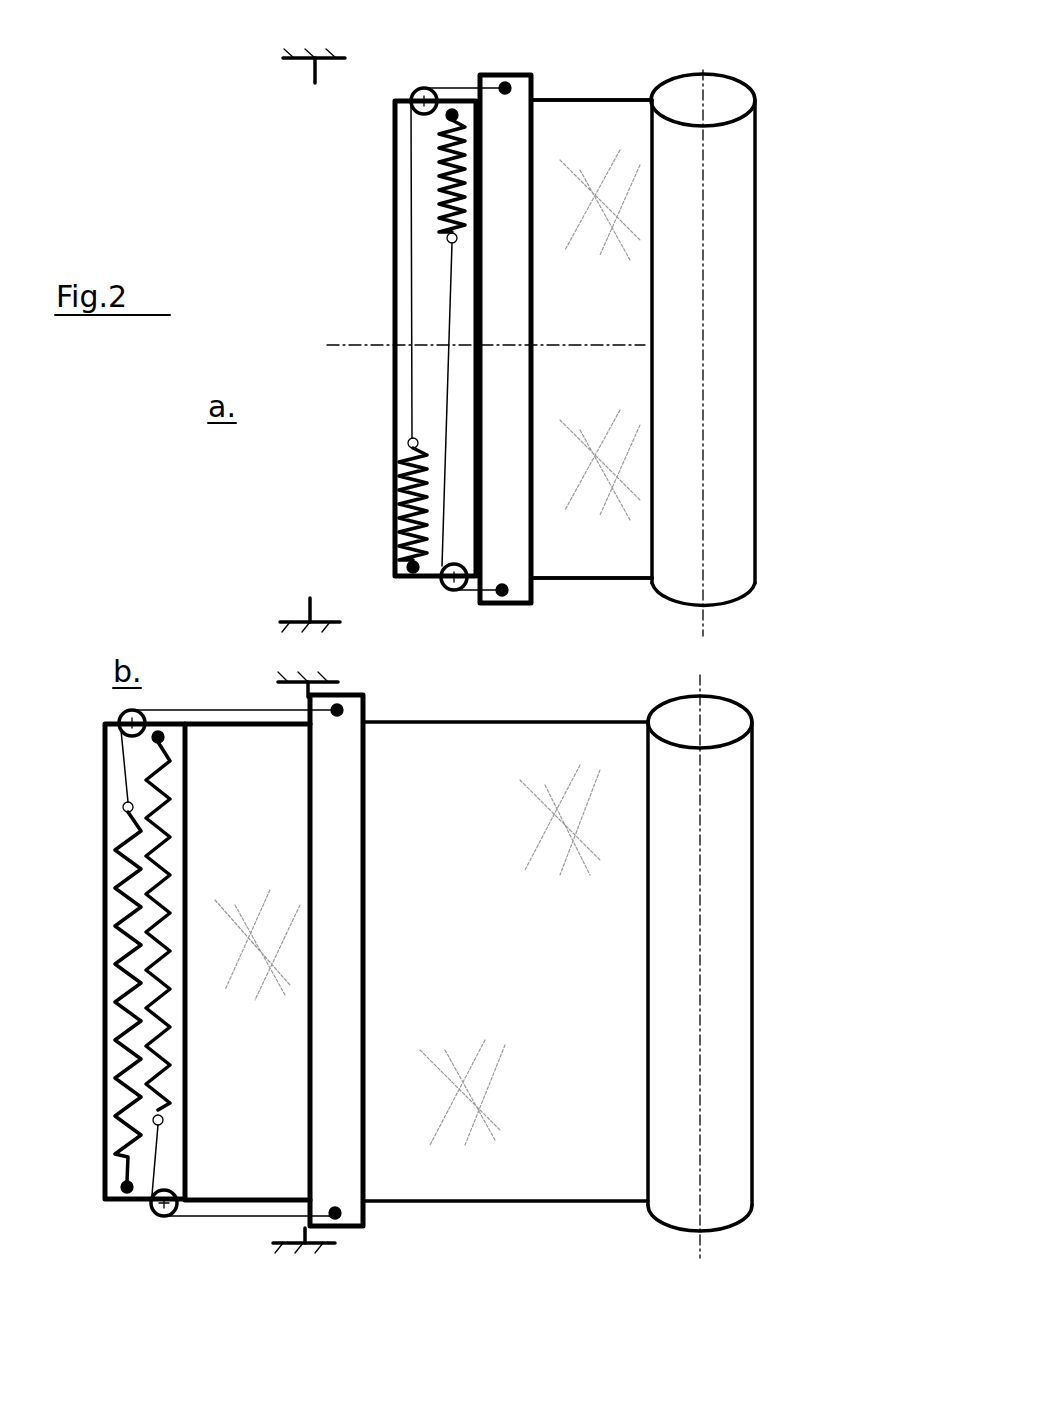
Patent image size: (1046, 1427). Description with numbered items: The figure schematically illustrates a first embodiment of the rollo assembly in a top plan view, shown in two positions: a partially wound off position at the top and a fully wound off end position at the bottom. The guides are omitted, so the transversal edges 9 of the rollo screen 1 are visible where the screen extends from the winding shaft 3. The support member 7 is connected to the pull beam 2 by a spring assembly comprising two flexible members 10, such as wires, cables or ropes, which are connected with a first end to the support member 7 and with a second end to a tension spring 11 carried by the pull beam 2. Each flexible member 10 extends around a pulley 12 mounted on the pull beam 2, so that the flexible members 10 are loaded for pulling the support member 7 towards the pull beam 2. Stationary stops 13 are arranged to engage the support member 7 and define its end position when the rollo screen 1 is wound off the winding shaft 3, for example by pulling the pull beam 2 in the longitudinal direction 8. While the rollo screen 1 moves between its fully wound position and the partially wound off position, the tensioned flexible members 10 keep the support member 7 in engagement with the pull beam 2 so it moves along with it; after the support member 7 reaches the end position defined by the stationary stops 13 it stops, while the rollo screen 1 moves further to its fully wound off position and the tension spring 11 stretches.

The rollo screen 1 is at (624, 566).
The pull beam 2 is at (395, 239).
The winding shaft 3 is at (683, 95).
The support member 7 is at (498, 76).
The longitudinal direction 8 is at (335, 343).
The transversal edges 9 is at (587, 100).
The flexible members 10 is at (455, 88).
The tension spring 11 is at (440, 180).
The pulley 12 is at (424, 88).
The stationary stops 13 is at (313, 78).